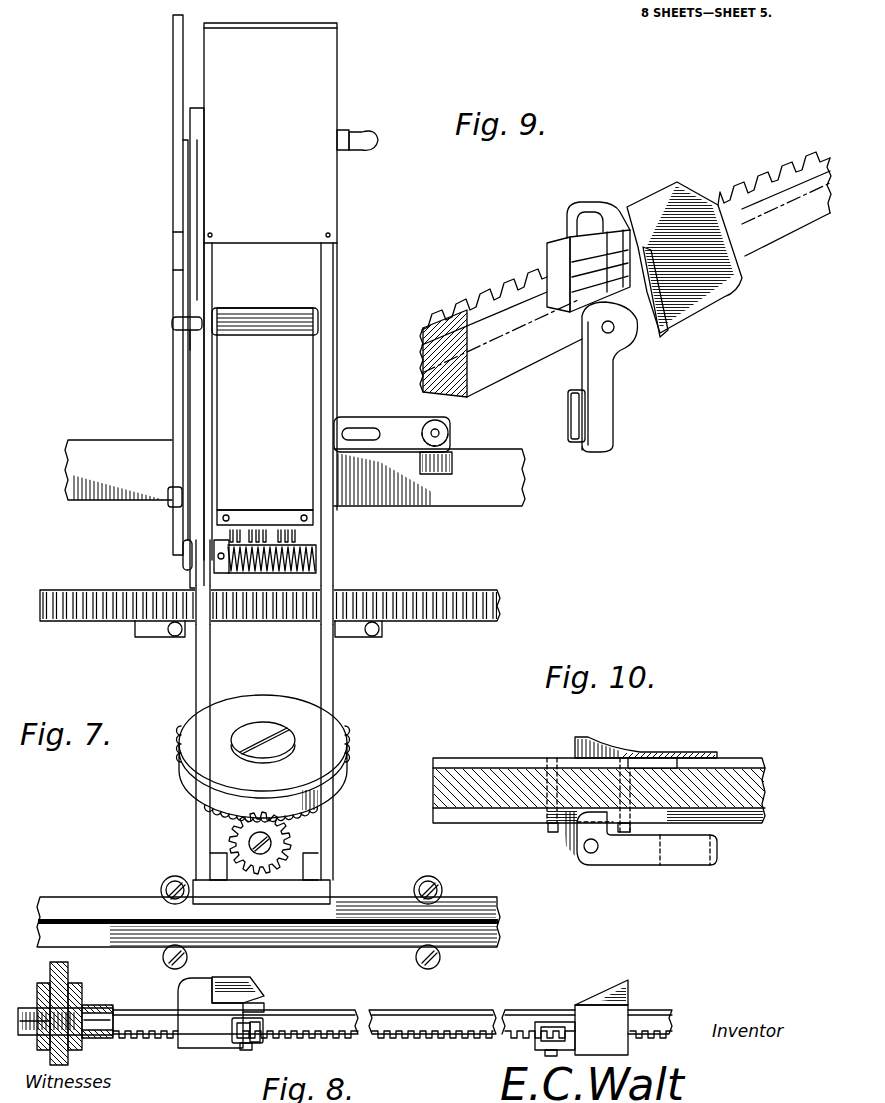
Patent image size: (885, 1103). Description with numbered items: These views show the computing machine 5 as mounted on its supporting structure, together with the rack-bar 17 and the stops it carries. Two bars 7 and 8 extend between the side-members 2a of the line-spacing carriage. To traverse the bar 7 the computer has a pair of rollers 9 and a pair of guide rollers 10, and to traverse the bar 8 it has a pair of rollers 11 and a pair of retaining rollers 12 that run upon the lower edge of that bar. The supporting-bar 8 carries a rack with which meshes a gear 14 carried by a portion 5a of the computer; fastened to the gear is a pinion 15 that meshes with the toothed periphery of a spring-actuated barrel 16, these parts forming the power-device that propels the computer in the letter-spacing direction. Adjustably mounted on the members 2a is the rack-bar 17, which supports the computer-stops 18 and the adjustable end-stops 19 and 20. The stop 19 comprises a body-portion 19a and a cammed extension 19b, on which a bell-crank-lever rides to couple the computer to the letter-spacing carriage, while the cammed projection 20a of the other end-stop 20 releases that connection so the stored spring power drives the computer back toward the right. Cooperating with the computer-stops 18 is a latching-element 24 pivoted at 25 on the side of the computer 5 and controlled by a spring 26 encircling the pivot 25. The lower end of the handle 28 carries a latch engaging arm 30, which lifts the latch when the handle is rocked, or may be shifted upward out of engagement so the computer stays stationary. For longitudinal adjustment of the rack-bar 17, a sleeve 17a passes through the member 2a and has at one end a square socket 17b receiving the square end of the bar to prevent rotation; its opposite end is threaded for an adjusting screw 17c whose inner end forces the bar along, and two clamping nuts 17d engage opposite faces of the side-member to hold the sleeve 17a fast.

In FIG. 7, the computing machine 5 is at (287, 451).
In FIG. 7, the portion of the computer 5a is at (333, 818).
In FIG. 7, the bar 7 is at (295, 473).
In FIG. 7, the supporting-bar 8 is at (457, 907).
In FIG. 7, the rollers 9 is at (450, 433).
In FIG. 7, the guide rollers 10 is at (452, 463).
In FIG. 7, the rollers 11 is at (168, 879).
In FIG. 7, the retaining rollers 12 is at (172, 968).
In FIG. 7, the gear 14 is at (228, 841).
In FIG. 7, the pinion 15 is at (293, 841).
In FIG. 7, the spring-actuated barrel 16 is at (347, 752).
In FIG. 7, the rack-bar 17 is at (443, 610).
In FIG. 8, the rack-bar 17 is at (338, 1013).
In FIG. 9, the rack-bar 17 is at (478, 288).
In FIG. 10, the rack-bar 17 is at (502, 770).
In FIG. 8, the sleeve 17a is at (82, 1009).
In FIG. 8, the square socket 17b is at (87, 1037).
In FIG. 8, the adjusting screw 17c is at (45, 1006).
In FIG. 8, the clamping nuts 17d is at (70, 990).
In FIG. 8, the side-members of the line-spacing carriage 2a is at (66, 968).
In FIG. 7, the computer-stops 18 is at (170, 634).
In FIG. 8, the computer-stops 18 is at (440, 1040).
In FIG. 10, the computer-stops 18 is at (616, 751).
In FIG. 8, the end-stop 19 is at (210, 1013).
In FIG. 9, the end-stop 19 is at (715, 248).
In FIG. 8, the body-portion 19a is at (240, 981).
In FIG. 9, the body-portion 19a is at (700, 290).
In FIG. 8, the cammed extension 19b is at (260, 1001).
In FIG. 9, the cammed extension 19b is at (662, 336).
In FIG. 8, the end-stop 20 is at (601, 1030).
In FIG. 8, the cammed projection 20a is at (596, 996).
In FIG. 7, the latching-element 24 is at (195, 518).
In FIG. 7, the pivot 25 is at (214, 568).
In FIG. 7, the spring 26 is at (318, 568).
In FIG. 7, the handle 28 is at (172, 132).
In FIG. 7, the latch engaging arm 30 is at (186, 540).